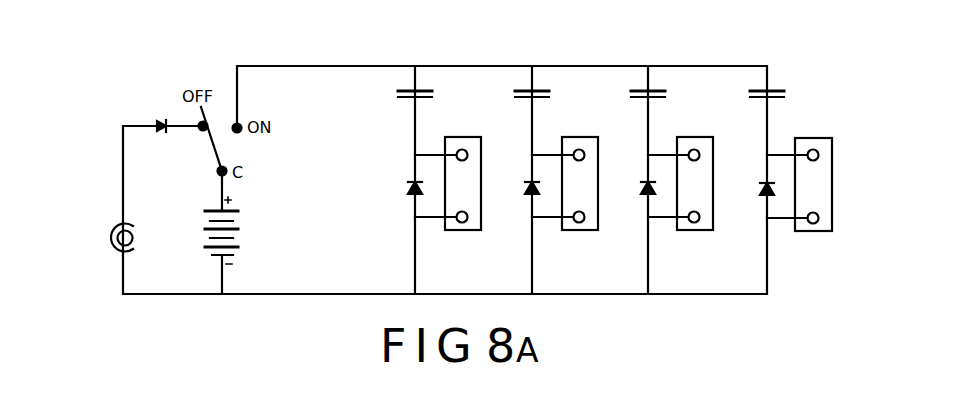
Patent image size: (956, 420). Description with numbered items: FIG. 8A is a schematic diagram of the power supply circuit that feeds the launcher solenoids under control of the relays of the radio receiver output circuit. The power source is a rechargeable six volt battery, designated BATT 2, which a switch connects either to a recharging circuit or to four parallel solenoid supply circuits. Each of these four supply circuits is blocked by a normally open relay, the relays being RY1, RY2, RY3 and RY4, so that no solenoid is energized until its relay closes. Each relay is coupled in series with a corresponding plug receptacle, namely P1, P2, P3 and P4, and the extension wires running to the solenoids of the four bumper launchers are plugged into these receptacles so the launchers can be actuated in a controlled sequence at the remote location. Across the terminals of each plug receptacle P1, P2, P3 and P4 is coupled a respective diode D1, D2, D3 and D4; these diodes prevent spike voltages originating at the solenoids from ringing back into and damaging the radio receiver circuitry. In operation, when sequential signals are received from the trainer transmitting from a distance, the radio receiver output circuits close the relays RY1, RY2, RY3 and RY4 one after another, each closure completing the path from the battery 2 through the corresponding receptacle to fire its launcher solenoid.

The battery 2 is at (216, 232).
The relay RY1 is at (433, 96).
The relay RY2 is at (551, 96).
The relay RY3 is at (667, 96).
The relay RY4 is at (786, 96).
The plug receptacle P1 is at (448, 183).
The plug receptacle P2 is at (565, 183).
The plug receptacle P3 is at (680, 183).
The plug receptacle P4 is at (799, 184).
The diode D1 is at (399, 185).
The diode D2 is at (526, 186).
The diode D3 is at (641, 186).
The diode D4 is at (759, 187).